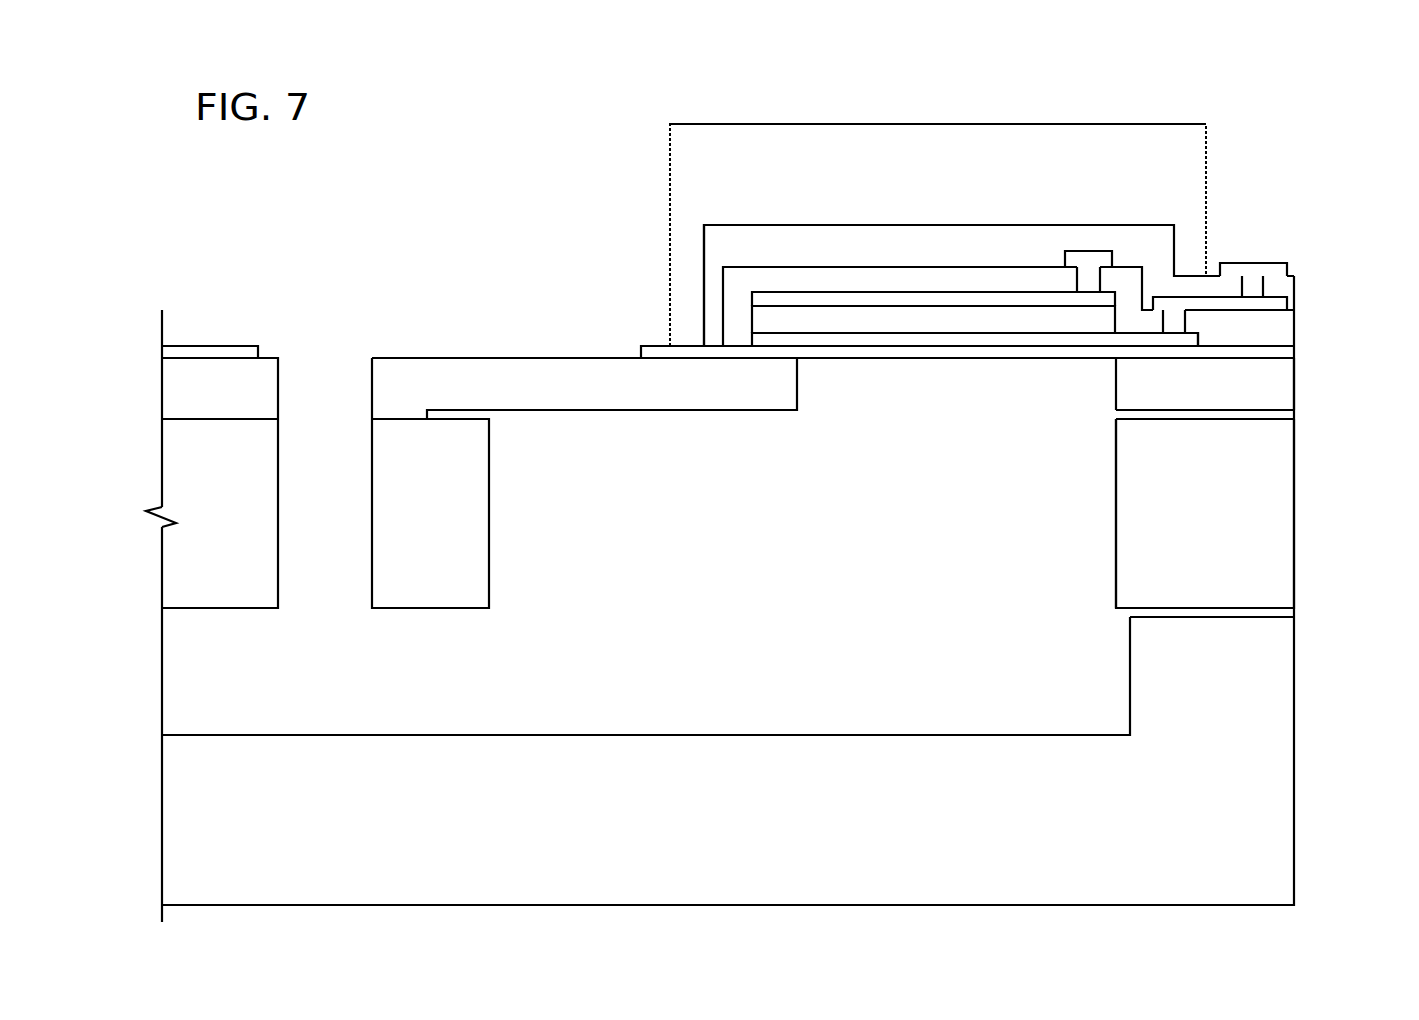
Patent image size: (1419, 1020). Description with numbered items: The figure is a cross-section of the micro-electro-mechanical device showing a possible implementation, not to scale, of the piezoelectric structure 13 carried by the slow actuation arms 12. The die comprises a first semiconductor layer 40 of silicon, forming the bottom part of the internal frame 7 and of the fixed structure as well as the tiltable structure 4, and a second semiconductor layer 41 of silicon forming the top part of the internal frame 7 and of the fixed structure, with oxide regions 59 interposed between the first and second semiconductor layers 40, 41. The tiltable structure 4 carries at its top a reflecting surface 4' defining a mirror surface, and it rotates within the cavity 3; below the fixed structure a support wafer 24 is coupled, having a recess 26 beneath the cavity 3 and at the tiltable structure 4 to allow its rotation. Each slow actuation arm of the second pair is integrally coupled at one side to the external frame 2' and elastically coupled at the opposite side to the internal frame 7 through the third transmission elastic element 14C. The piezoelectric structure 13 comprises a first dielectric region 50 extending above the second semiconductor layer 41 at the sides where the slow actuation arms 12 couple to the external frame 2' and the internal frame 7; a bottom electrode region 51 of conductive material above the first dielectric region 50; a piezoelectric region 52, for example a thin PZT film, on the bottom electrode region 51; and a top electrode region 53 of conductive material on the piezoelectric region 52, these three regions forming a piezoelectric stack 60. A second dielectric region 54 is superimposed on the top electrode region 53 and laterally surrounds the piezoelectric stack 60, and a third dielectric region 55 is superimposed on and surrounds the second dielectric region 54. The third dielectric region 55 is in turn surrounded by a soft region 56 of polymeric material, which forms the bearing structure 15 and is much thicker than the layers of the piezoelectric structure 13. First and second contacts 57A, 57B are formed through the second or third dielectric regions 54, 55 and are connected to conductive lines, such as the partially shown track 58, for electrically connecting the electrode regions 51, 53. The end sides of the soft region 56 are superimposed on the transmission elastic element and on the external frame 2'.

The cavity 3 is at (832, 525).
The recess 26 is at (342, 702).
The support wafer 24 is at (918, 763).
The tiltable structure 4 is at (183, 483).
The reflecting surface 4' is at (176, 332).
The internal frame 7 is at (468, 565).
The third transmission elastic element 14C is at (620, 390).
The oxide regions 59 is at (488, 420).
The second semiconductor layer 41 is at (1263, 388).
The first semiconductor layer 40 is at (1255, 493).
The external frame 2' is at (1073, 513).
The first dielectric region 50 is at (645, 352).
The bottom electrode region 51 is at (767, 342).
The piezoelectric region 52 is at (768, 320).
The top electrode region 53 is at (762, 300).
The second dielectric region 54 is at (737, 277).
The third dielectric region 55 is at (720, 243).
The soft region 56 is at (688, 155).
The piezoelectric stack 60 is at (961, 319).
The first contact 57A is at (1085, 265).
The second contact 57B is at (1258, 270).
The track 58 is at (1280, 300).
The slow actuation arms 12 is at (766, 113).
The bearing structure 15 is at (868, 168).
The piezoelectric structure 13 is at (993, 276).